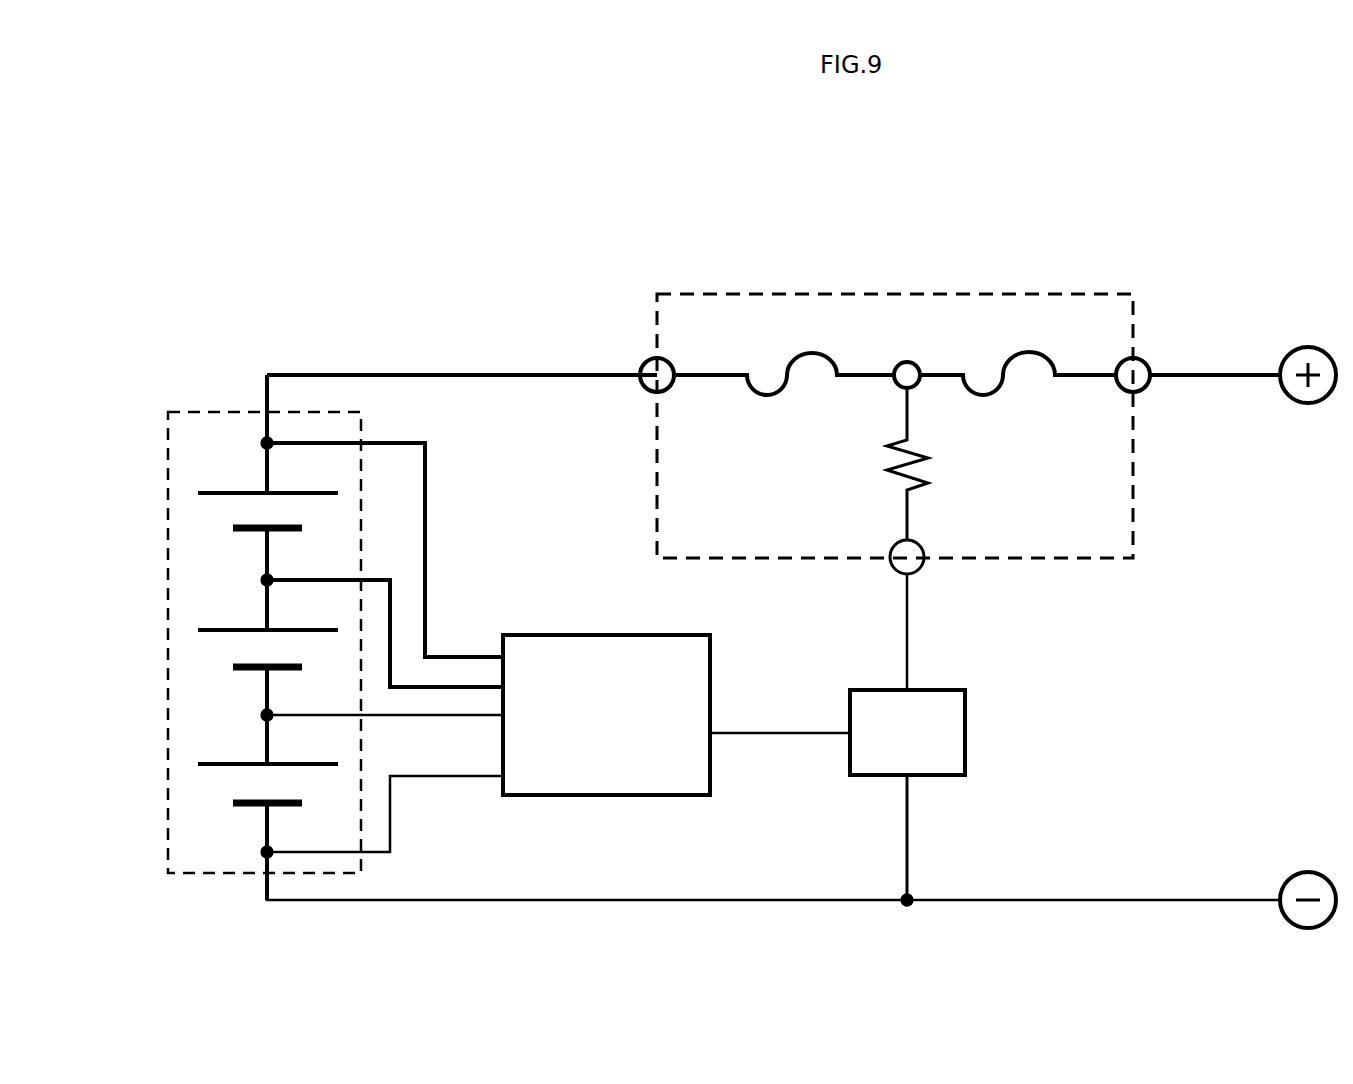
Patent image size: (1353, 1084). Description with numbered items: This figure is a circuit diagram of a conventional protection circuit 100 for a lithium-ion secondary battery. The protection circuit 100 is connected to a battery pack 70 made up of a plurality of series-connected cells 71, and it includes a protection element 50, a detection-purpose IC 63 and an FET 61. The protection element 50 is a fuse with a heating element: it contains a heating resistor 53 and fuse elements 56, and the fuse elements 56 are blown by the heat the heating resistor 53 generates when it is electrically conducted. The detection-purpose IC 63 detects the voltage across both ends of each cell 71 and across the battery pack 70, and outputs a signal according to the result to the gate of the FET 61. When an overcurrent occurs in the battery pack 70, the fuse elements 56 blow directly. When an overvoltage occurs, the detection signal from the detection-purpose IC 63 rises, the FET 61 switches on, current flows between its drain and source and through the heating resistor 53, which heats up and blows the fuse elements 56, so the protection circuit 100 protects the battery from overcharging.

The protection circuit 100 is at (322, 240).
The battery pack 70 is at (280, 594).
The cell 71 is at (227, 492).
The protection element 50 is at (912, 363).
The fuse elements 56 is at (812, 352).
The heating resistor 53 is at (932, 470).
The FET 61 is at (965, 735).
The detection-purpose IC 63 is at (642, 784).